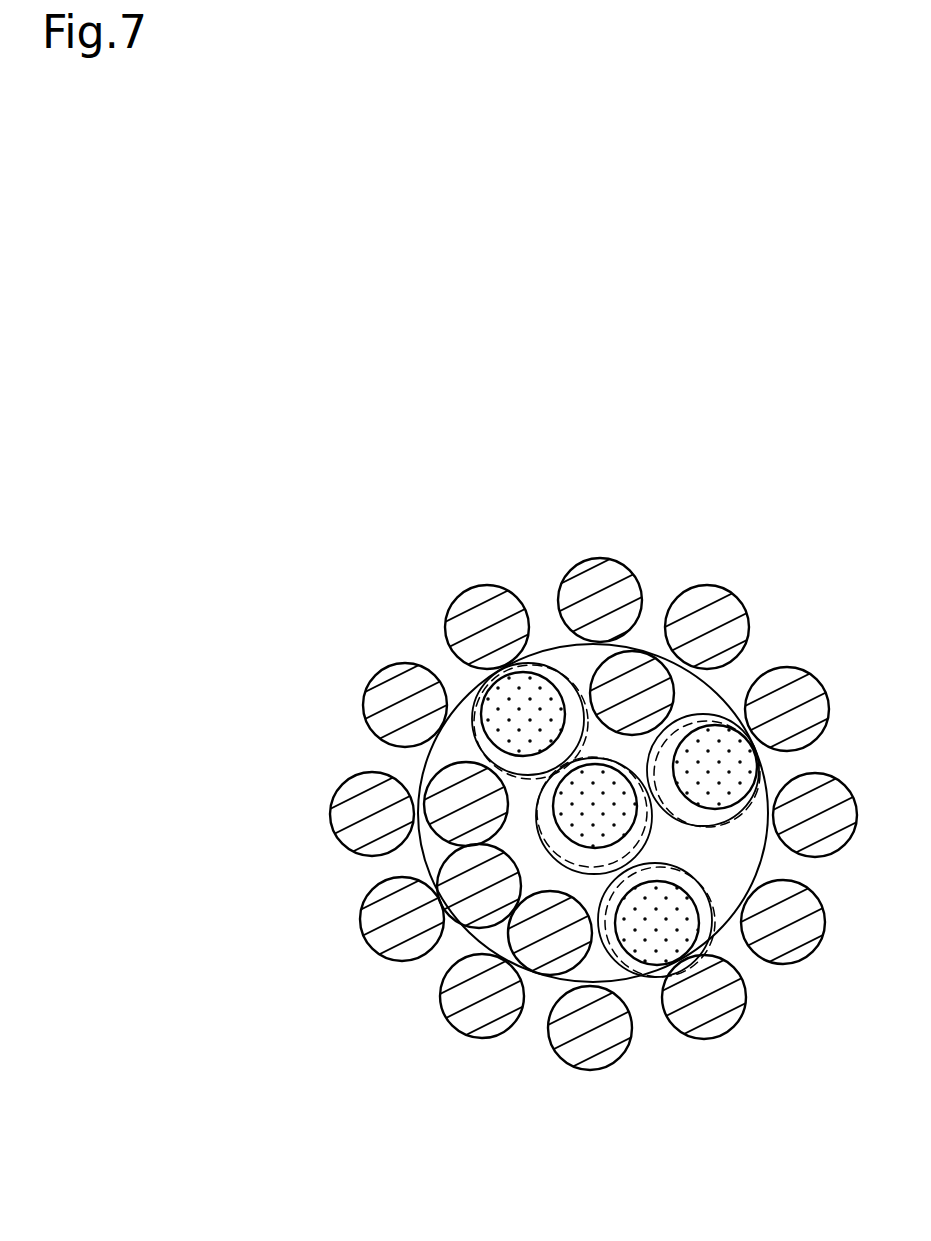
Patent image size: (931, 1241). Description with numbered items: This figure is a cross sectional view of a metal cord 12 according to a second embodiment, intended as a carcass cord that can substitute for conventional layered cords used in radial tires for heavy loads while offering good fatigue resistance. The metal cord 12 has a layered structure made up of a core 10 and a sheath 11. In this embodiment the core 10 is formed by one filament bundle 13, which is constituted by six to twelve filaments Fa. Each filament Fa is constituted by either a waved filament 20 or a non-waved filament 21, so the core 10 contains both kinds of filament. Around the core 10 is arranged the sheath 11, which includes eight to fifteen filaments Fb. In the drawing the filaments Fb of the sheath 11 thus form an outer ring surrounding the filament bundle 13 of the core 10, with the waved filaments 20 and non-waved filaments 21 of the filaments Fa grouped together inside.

The filament Fb is at (570, 583).
The filament Fa is at (486, 785).
The sheath 11 is at (634, 555).
The metal cord 12 is at (843, 462).
The core 10 is at (657, 719).
The filament bundle 13 is at (708, 700).
The waved filament 20 is at (476, 692).
The non-waved filament 21 is at (443, 788).